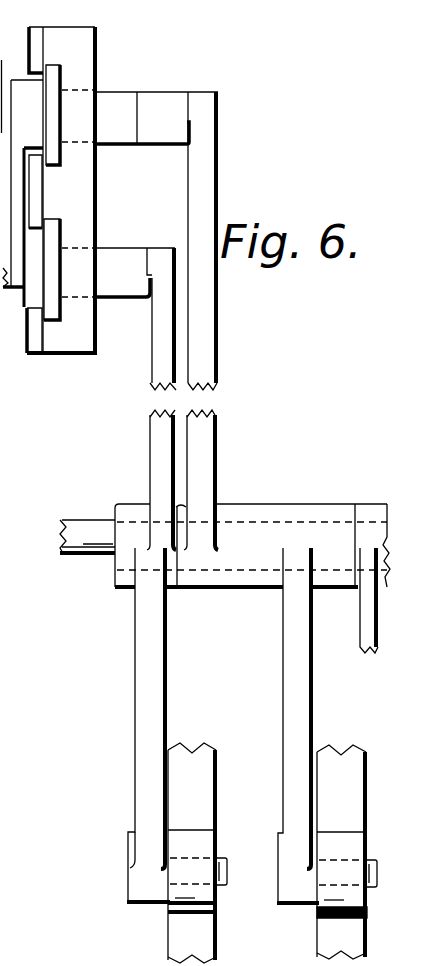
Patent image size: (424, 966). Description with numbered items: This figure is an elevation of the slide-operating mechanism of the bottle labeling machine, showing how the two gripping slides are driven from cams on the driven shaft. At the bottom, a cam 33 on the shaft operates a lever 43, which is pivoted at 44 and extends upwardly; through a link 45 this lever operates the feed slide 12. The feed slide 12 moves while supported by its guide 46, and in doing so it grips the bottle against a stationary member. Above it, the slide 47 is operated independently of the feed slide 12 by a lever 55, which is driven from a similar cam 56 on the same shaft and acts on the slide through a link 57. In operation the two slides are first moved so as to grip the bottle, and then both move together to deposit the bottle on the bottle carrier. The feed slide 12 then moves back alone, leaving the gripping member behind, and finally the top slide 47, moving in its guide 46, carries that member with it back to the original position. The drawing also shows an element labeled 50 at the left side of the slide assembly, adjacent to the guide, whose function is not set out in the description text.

The feed slide 12 is at (50, 233).
The slide 47 is at (52, 77).
The latch bracket 50 is at (20, 193).
The guide 46 is at (62, 343).
The link 57 is at (115, 132).
The lever 55 is at (202, 355).
The link 45 is at (122, 285).
The lever 43 is at (152, 367).
The pivot 44 is at (95, 570).
The cam 33 is at (207, 772).
The cam 56 is at (352, 758).